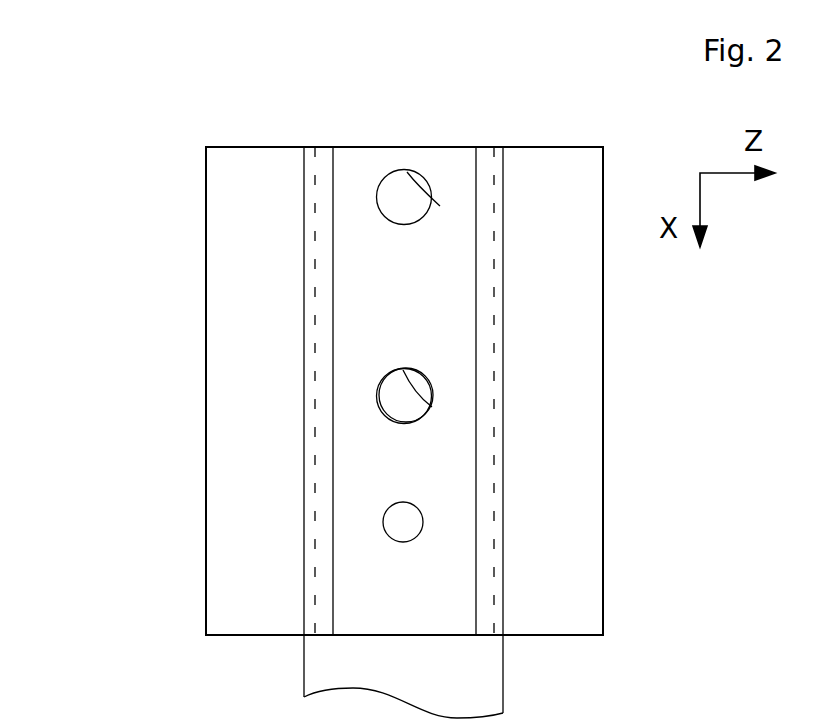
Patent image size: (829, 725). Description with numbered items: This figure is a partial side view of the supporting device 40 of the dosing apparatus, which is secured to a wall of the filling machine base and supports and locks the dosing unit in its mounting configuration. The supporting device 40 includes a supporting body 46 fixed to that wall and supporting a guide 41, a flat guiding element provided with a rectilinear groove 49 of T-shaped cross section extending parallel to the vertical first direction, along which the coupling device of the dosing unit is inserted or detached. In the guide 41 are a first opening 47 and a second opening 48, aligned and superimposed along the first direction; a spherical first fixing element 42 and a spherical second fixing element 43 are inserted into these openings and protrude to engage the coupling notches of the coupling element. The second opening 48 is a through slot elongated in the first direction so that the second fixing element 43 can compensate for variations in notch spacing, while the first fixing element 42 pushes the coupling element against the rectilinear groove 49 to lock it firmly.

The supporting device 40 is at (163, 107).
The guide 41 is at (377, 312).
The first fixing element 42 is at (387, 202).
The second fixing element 43 is at (388, 408).
The supporting body 46 is at (248, 508).
The first opening 47 is at (407, 172).
The second opening 48 is at (403, 370).
The rectilinear groove 49 is at (479, 522).